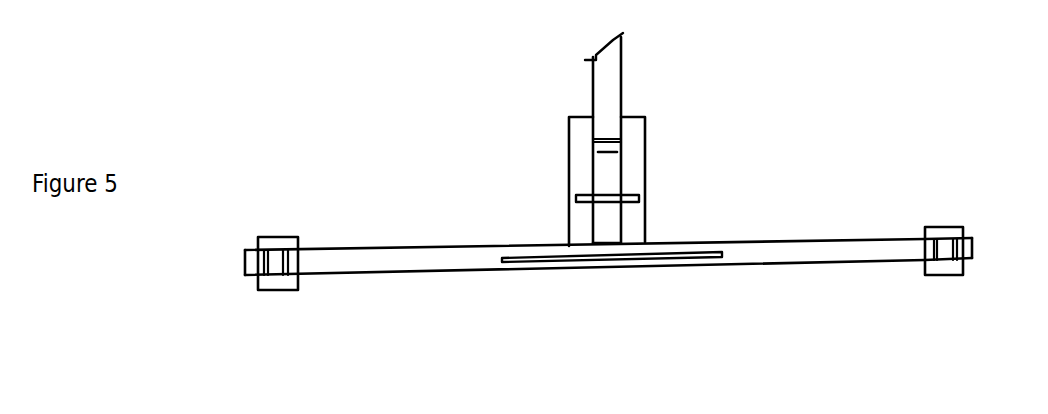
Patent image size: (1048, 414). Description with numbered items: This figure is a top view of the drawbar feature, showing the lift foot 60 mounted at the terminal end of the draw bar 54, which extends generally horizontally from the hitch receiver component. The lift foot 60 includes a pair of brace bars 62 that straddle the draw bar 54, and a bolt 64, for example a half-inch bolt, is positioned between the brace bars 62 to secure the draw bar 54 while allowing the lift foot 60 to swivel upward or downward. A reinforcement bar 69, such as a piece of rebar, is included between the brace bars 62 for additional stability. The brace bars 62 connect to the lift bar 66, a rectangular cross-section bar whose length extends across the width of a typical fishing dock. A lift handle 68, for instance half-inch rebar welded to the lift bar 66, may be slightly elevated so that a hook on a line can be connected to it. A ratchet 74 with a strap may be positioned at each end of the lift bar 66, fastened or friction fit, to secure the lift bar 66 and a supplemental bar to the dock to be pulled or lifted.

The lift foot 60 is at (382, 103).
The draw bar 54 is at (610, 70).
The brace bars 62 is at (577, 162).
The bolt 64 is at (620, 117).
The lift bar 66 is at (357, 255).
The lift handle 68 is at (672, 260).
The reinforcement bar 69 is at (613, 200).
The ratchet 74 is at (940, 228).